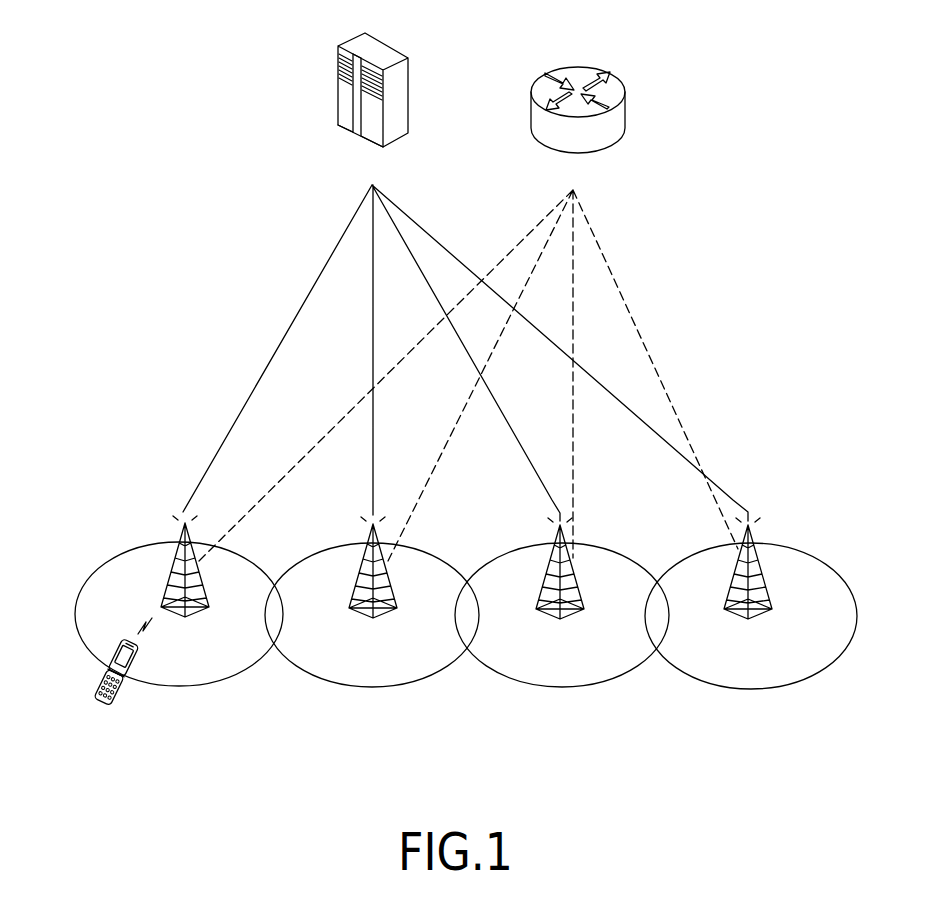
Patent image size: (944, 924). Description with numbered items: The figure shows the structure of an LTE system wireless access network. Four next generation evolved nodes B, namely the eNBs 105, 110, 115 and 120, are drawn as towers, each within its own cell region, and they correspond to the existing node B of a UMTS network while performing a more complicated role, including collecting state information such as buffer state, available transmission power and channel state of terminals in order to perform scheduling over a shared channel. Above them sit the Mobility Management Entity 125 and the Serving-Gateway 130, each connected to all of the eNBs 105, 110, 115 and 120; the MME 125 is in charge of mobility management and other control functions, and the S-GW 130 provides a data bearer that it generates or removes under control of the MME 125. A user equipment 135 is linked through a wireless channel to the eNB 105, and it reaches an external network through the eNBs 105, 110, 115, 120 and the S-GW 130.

The evolved node B 105 is at (199, 576).
The evolved node B 110 is at (387, 577).
The evolved node B 115 is at (574, 577).
The evolved node B 120 is at (763, 577).
The Mobility Management Entity 125 is at (384, 43).
The Serving-Gateway 130 is at (578, 65).
The user equipment 135 is at (127, 688).